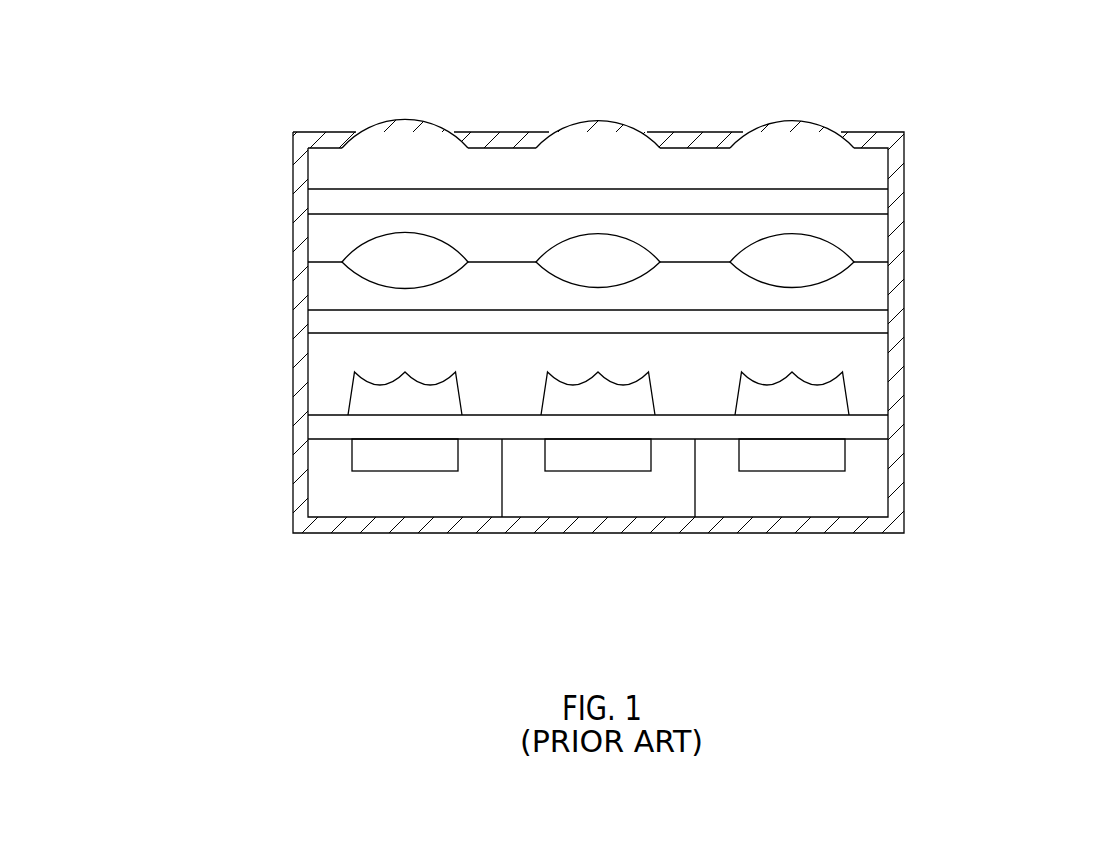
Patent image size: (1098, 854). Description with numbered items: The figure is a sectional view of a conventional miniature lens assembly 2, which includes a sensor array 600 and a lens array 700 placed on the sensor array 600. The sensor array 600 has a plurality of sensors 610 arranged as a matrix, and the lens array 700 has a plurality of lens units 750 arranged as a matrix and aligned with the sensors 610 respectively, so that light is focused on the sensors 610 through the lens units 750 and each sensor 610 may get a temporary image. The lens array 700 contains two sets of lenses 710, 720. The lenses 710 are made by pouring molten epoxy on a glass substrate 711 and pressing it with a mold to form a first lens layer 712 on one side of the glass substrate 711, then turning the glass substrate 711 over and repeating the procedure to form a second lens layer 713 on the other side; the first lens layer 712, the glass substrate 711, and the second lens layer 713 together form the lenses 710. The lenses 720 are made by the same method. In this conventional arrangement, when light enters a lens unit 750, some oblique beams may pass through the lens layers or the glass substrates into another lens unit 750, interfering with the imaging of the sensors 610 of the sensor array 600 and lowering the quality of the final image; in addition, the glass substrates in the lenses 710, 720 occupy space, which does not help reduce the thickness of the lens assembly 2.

The miniature lens assembly 2 is at (951, 87).
The sensor array 600 is at (838, 619).
The sensor 610 is at (403, 502).
The lens array 700 is at (205, 188).
The lens 710 is at (273, 148).
The glass substrate 711 is at (872, 197).
The first lens layer 712 is at (873, 170).
The second lens layer 713 is at (873, 228).
The lens 720 is at (273, 262).
The lens unit 750 is at (403, 140).